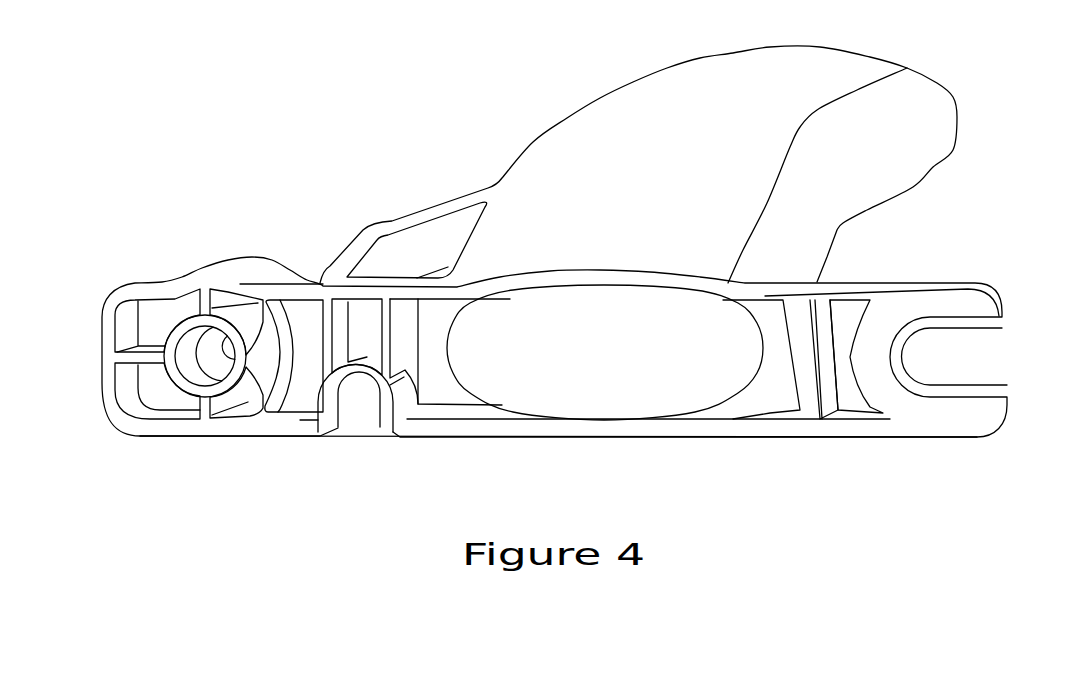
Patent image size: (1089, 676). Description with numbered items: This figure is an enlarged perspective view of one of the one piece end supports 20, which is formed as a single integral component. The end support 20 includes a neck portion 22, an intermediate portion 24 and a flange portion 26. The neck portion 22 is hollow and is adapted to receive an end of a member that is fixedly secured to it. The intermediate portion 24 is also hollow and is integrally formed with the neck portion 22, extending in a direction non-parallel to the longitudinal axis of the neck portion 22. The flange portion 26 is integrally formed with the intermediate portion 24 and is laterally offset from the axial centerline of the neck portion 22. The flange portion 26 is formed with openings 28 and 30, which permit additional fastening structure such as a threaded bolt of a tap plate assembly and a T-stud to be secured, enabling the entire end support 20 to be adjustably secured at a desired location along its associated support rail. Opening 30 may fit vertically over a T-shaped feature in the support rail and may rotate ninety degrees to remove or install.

The one piece end support 20 is at (527, 132).
The neck portion 22 is at (916, 165).
The intermediate portion 24 is at (826, 262).
The flange portion 26 is at (885, 420).
The opening 28 is at (162, 430).
The opening 30 is at (965, 382).